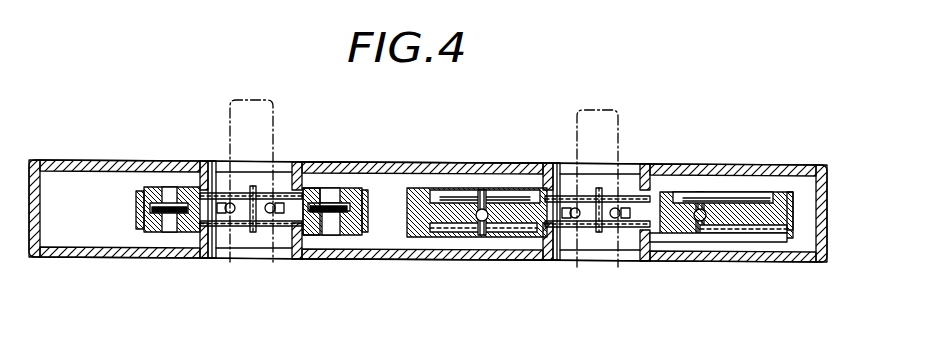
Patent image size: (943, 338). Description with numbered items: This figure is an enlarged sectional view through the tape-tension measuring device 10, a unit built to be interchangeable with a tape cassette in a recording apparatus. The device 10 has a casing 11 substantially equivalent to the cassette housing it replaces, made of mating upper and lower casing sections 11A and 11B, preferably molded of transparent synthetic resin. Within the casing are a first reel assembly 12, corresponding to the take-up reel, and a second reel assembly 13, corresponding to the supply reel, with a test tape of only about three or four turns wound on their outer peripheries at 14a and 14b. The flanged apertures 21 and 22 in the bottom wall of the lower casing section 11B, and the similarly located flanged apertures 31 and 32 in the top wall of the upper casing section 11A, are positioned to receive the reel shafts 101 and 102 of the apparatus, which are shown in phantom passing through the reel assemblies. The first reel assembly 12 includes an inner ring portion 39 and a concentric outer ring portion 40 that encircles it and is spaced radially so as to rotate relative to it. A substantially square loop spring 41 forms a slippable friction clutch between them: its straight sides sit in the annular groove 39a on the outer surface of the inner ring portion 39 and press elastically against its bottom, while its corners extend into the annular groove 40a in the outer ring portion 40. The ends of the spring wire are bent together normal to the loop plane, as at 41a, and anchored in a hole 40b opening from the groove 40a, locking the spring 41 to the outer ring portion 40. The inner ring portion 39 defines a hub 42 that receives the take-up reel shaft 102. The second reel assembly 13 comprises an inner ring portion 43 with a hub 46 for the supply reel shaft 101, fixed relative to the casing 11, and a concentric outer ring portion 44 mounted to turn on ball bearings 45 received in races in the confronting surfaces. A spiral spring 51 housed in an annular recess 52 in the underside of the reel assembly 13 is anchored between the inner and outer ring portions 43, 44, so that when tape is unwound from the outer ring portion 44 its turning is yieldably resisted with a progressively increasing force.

The tape-tension measuring device 10 is at (727, 143).
The casing 11 is at (807, 165).
The upper casing section 11A is at (478, 262).
The lower casing section 11B is at (450, 165).
The first reel assembly 12 is at (120, 217).
The second reel assembly 13 is at (800, 243).
The wound portion of test tape 14a is at (135, 206).
The wound portion of test tape 14b is at (800, 200).
The flanged aperture 21 is at (633, 250).
The flanged aperture 22 is at (282, 250).
The flanged aperture 31 is at (640, 176).
The flanged aperture 32 is at (282, 170).
The inner ring portion 39 is at (186, 190).
The annular groove 39a is at (187, 224).
The outer ring portion 40 is at (357, 187).
The annular groove 40a is at (333, 190).
The hole 40b is at (337, 237).
The loop spring 41 is at (151, 228).
The bent ends of loop spring 41a is at (365, 250).
The hub 42 is at (217, 250).
The inner ring portion 43 is at (508, 195).
The outer ring portion 44 is at (793, 222).
The ball bearings 45 is at (484, 210).
The hub 46 is at (605, 202).
The spiral spring 51 is at (735, 193).
The annular recess 52 is at (440, 193).
The supply reel shaft 101 is at (622, 113).
The take-up reel shaft 102 is at (274, 116).